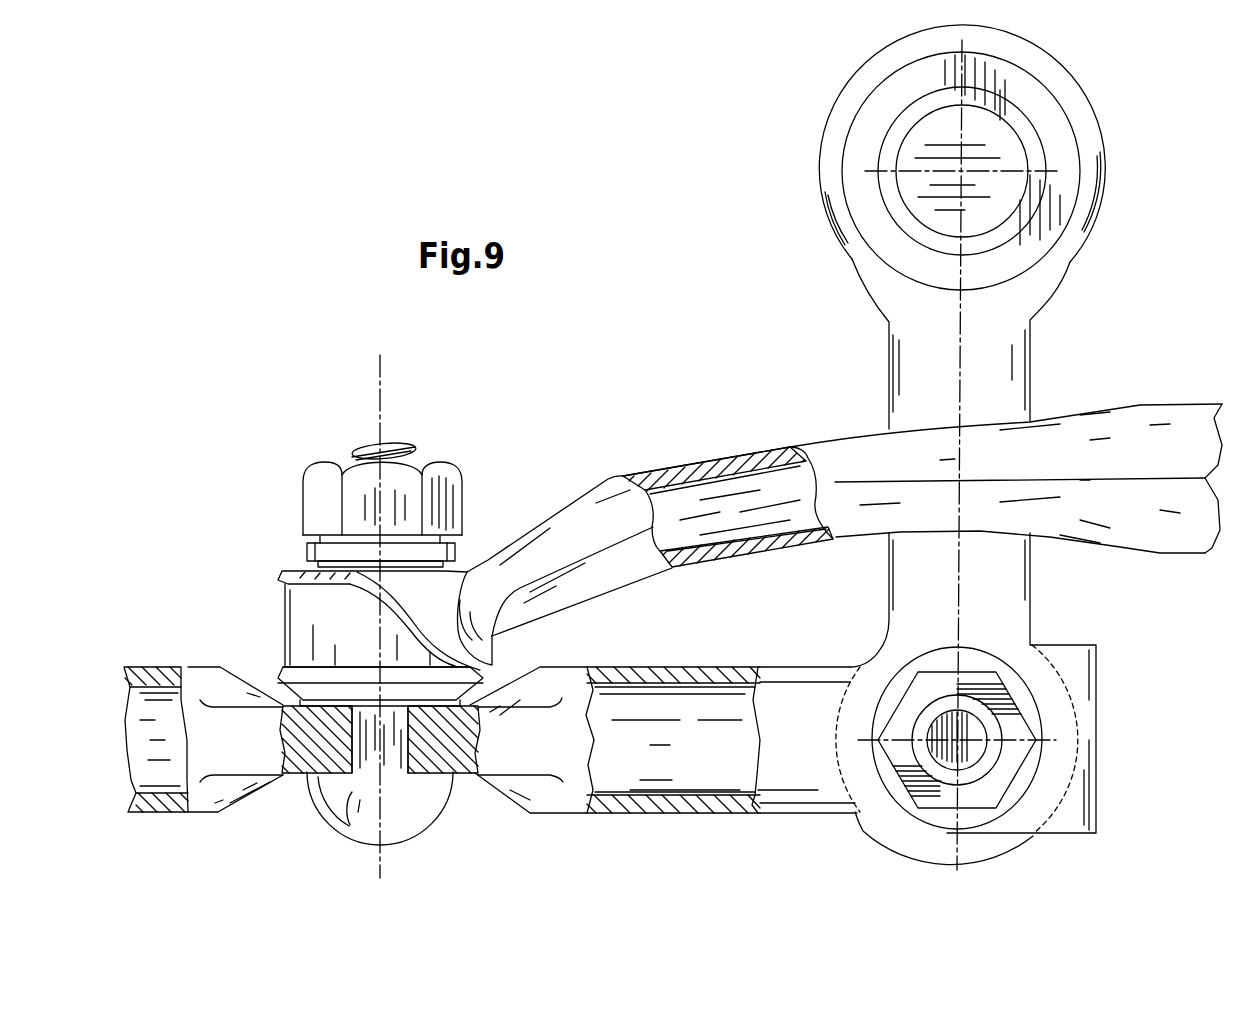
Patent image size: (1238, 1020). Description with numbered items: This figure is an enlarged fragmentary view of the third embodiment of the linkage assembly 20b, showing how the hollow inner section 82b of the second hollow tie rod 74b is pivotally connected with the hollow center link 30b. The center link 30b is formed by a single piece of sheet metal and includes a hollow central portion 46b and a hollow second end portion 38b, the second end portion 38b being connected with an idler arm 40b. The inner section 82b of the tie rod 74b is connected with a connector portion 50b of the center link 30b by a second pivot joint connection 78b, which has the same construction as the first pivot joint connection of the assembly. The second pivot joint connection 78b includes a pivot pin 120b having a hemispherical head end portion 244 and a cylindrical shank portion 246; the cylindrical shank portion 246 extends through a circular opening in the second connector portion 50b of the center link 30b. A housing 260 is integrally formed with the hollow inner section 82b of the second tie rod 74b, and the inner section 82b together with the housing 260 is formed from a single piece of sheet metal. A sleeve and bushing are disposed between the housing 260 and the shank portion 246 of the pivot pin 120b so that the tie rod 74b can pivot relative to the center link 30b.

The linkage assembly 20b is at (624, 366).
The idler arm 40b is at (997, 306).
The hollow inner section 82b is at (1192, 412).
The second hollow tie rod 74b is at (746, 430).
The second pivot joint connection 78b is at (317, 440).
The pivot pin 120b is at (405, 448).
The housing 260 is at (315, 627).
The hollow center link 30b is at (158, 648).
The hollow central portion 46b is at (160, 815).
The connector portion 50b is at (302, 775).
The cylindrical shank portion 246 is at (397, 748).
The hemispherical head end portion 244 is at (410, 822).
The hollow second end portion 38b is at (640, 803).